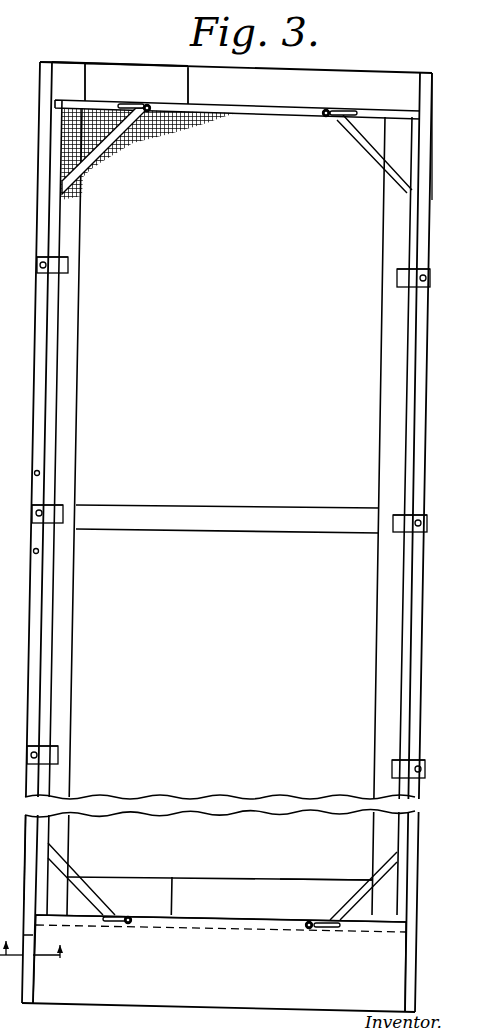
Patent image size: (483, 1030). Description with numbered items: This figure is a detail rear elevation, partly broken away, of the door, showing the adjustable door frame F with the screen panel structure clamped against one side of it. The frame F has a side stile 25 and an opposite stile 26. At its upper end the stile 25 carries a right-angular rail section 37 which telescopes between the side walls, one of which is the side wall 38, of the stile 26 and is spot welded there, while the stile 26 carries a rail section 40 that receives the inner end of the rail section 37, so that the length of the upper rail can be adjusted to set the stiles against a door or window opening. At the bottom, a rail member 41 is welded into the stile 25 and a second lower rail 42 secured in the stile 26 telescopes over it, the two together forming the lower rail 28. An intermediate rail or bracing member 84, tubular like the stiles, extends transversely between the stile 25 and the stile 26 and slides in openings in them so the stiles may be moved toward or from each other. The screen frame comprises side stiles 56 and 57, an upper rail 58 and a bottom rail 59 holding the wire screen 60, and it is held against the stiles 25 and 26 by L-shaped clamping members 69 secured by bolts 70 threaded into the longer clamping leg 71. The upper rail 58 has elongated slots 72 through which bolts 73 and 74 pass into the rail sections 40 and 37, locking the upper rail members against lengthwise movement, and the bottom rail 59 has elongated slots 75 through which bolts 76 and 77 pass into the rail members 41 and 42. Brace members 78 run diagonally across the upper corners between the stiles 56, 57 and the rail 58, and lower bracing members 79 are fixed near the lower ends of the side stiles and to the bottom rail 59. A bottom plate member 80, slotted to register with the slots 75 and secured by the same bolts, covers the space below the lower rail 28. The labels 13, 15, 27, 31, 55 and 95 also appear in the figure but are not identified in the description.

The door frame lower portion 13 is at (26, 787).
The height dimension 15 is at (38, 940).
The stile 25 is at (40, 220).
The stile 26 is at (419, 372).
The head rail of door frame 27 is at (350, 83).
The lower rail 28 is at (230, 866).
The bottom rail of door frame 31 is at (25, 982).
The rail section 37 is at (122, 72).
The side wall 38 is at (62, 637).
The rail section 40 is at (382, 82).
The rail member 41 is at (171, 864).
The second lower rail 42 is at (307, 870).
The fastening screws 55 is at (33, 473).
The side stile 56 is at (52, 312).
The side stile 57 is at (412, 308).
The upper rail 58 is at (300, 117).
The bottom rail 59 is at (267, 905).
The wire screen 60 is at (117, 147).
The L-shaped clamping member 69 is at (70, 268).
The bolt 70 is at (38, 266).
The outer leg 71 is at (67, 262).
The elongated slot 72 is at (132, 104).
The bolt 73 is at (325, 108).
The bolt 74 is at (148, 106).
The elongated slot 75 is at (110, 924).
The bolt 76 is at (128, 926).
The bolt 77 is at (308, 930).
The brace member 78 is at (62, 165).
The lower bracing member 79 is at (68, 866).
The bottom plate member 80 is at (100, 995).
The intermediate rail 84 is at (300, 492).
The upper corner of door frame 95 is at (26, 66).
The frame F is at (436, 106).